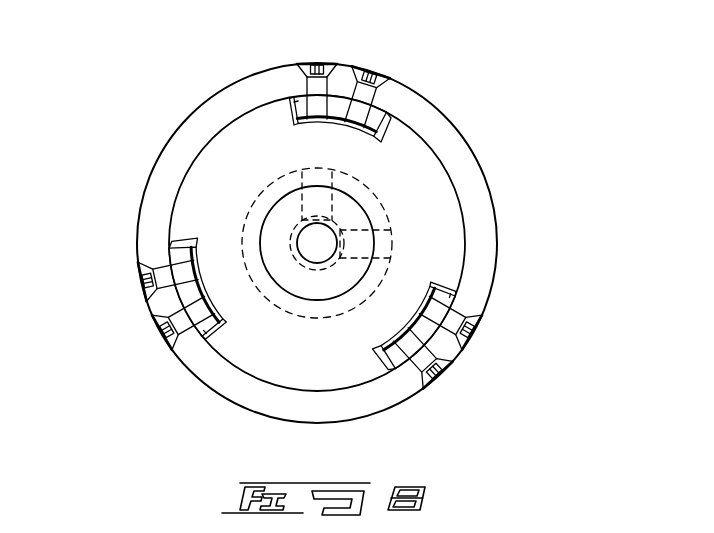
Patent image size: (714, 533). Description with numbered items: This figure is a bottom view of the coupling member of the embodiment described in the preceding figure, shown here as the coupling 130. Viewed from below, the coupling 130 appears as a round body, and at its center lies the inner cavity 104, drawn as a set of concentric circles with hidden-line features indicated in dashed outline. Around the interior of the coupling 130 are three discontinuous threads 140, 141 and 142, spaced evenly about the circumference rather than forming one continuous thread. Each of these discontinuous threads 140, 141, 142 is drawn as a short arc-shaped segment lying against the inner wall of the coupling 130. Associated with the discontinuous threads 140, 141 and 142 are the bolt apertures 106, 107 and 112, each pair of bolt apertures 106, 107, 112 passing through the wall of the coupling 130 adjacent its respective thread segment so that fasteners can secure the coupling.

The inner cavity 104 is at (262, 172).
The bolt aperture 106 is at (165, 328).
The bolt aperture 107 is at (443, 372).
The bolt aperture 112 is at (305, 64).
The coupling 130 is at (530, 84).
The discontinuous thread 140 is at (205, 284).
The discontinuous thread 141 is at (380, 124).
The discontinuous thread 142 is at (462, 292).